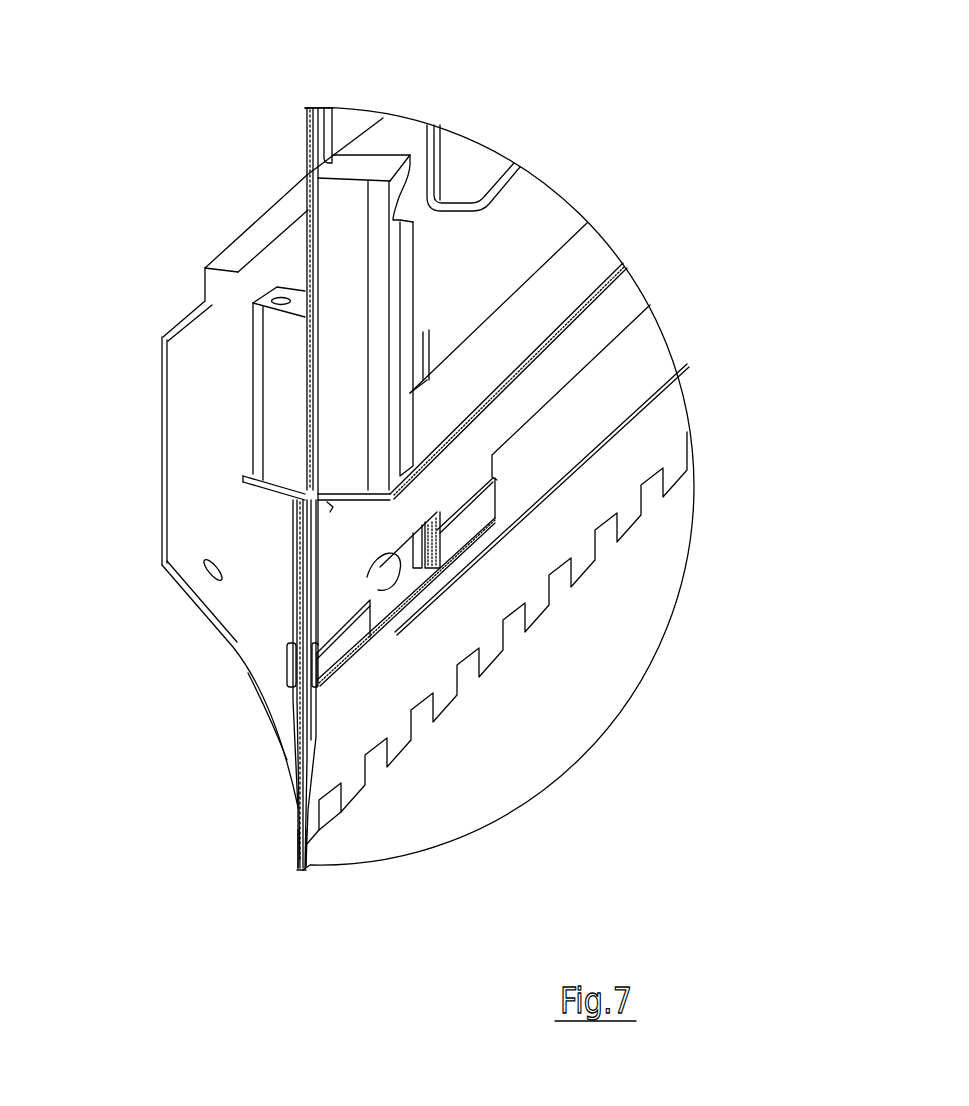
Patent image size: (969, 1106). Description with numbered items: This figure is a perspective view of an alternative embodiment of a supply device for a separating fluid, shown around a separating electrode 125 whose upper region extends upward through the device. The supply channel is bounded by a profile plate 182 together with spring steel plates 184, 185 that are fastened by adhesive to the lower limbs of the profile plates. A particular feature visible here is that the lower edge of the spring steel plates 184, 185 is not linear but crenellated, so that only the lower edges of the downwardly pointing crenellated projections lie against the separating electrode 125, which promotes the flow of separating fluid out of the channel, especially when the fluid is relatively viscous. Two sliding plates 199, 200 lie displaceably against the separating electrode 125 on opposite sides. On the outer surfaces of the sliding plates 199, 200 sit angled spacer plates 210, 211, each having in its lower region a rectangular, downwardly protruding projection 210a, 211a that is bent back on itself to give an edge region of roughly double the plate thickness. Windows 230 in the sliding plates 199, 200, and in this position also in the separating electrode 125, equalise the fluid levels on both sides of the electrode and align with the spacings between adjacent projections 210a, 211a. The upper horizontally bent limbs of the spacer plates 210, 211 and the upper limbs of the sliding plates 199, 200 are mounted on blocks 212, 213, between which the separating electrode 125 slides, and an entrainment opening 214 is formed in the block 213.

The separating electrode 125 is at (303, 863).
The profile plate 182 is at (230, 602).
The spring steel plate 184 is at (268, 703).
The spring steel plate 185 is at (525, 505).
The sliding plate 199 is at (300, 717).
The sliding plate 200 is at (318, 828).
The angled spacer plate 210 is at (297, 525).
The projection 210a is at (293, 663).
The angled spacer plate 211 is at (600, 313).
The projection 211a is at (337, 640).
The block 212 is at (280, 395).
The block 213 is at (380, 313).
The entrainment opening 214 is at (430, 207).
The window 230 is at (168, 582).